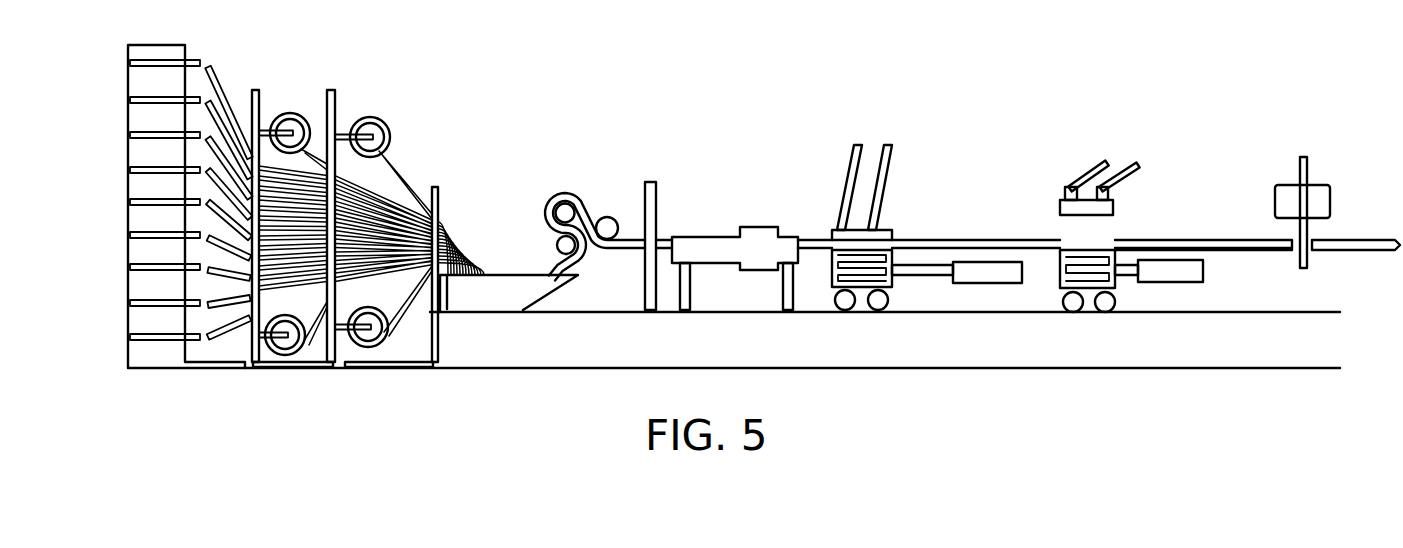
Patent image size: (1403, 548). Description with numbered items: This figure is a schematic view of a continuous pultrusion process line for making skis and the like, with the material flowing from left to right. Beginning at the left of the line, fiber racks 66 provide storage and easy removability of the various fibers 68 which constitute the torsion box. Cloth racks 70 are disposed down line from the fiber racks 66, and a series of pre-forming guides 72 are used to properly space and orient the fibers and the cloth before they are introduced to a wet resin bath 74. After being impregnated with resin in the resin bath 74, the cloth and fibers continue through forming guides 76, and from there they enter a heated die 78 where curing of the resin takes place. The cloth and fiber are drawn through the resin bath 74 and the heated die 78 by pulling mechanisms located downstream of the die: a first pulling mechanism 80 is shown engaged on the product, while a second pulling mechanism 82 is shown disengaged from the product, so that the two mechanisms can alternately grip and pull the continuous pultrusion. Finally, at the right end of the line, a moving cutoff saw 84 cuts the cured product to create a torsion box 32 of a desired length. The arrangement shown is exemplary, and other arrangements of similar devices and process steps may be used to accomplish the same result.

The torsion box 32 is at (1357, 240).
The fiber racks 66 is at (155, 369).
The fibers 68 is at (222, 92).
The cloth racks 70 is at (300, 116).
The pre-forming guides 72 is at (258, 92).
The wet resin bath 74 is at (533, 292).
The forming guides 76 is at (570, 202).
The heated die 78 is at (700, 237).
The first pulling mechanism 80 is at (860, 313).
The second pulling mechanism 82 is at (1090, 313).
The moving cutoff saw 84 is at (1276, 190).